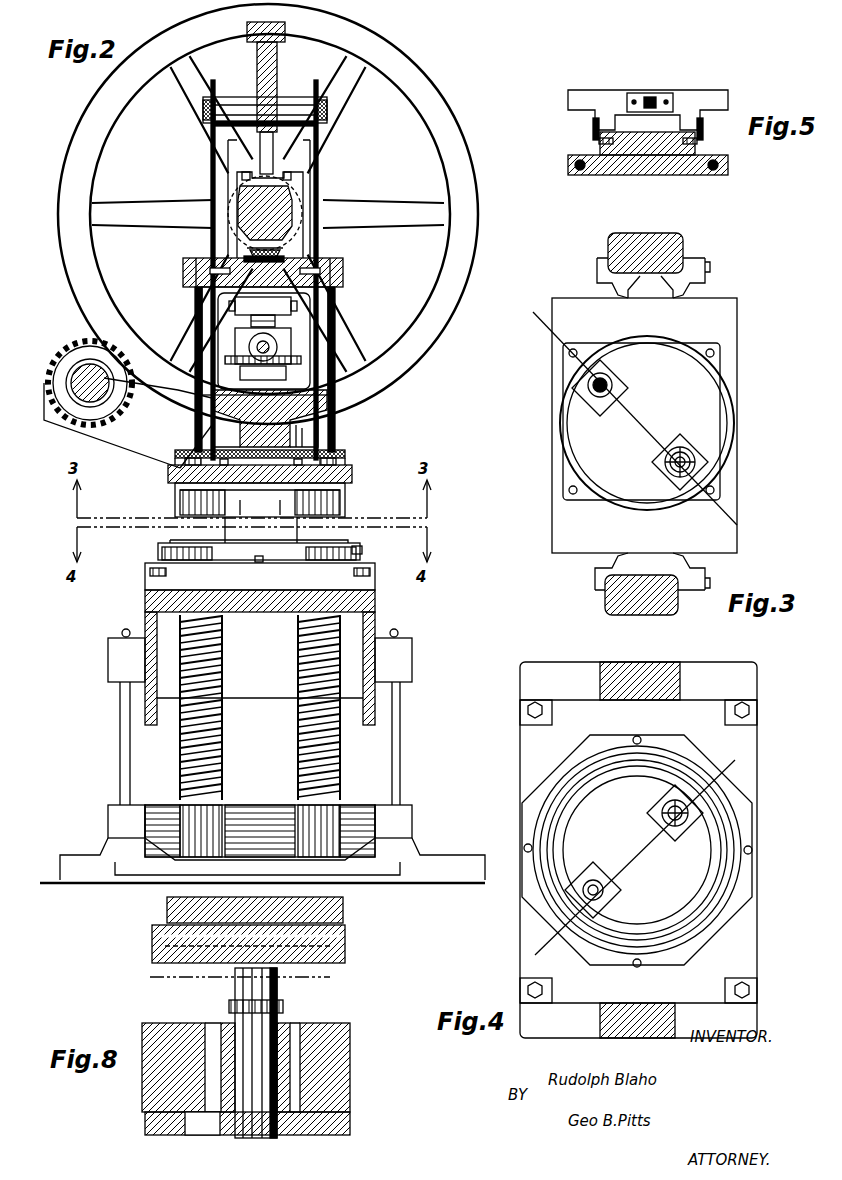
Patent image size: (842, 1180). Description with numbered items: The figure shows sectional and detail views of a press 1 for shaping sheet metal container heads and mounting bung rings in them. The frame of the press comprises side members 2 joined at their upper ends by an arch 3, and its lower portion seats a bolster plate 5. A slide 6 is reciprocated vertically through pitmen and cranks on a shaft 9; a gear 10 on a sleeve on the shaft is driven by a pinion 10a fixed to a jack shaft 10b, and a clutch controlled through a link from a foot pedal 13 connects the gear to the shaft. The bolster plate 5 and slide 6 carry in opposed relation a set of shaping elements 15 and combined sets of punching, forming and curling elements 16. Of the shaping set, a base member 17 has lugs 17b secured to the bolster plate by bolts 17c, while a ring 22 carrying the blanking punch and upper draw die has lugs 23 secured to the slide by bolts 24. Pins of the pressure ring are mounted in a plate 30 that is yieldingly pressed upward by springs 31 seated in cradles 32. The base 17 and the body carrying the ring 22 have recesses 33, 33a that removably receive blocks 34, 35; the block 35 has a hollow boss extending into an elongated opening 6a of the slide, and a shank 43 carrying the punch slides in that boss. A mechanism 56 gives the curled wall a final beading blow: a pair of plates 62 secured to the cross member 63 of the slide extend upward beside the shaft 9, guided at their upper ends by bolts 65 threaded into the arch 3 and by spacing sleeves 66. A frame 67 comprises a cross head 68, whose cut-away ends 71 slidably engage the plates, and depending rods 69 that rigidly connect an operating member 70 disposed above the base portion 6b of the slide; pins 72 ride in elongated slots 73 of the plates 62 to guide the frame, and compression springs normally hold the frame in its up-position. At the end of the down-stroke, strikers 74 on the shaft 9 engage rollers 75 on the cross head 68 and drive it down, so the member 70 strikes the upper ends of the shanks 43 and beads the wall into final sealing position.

In FIG. 2, the press 1 is at (246, 591).
In FIG. 3, the side members 2 is at (665, 235).
In FIG. 4, the side members 2 is at (640, 850).
In FIG. 2, the arch 3 is at (286, 30).
In FIG. 2, the bolster plate 5 is at (183, 270).
In FIG. 4, the bolster plate 5 is at (522, 748).
In FIG. 3, the slide 6 is at (748, 308).
In FIG. 4, the slide 6 is at (632, 851).
In FIG. 8, the opening 6a is at (340, 1052).
In FIG. 2, the base portion 6b is at (170, 478).
In FIG. 2, the shaft 9 is at (292, 218).
In FIG. 2, the gear 10 is at (428, 106).
In FIG. 2, the pinion 10a is at (76, 342).
In FIG. 2, the jack shaft 10b is at (72, 440).
In FIG. 2, the foot pedal 13 is at (464, 858).
In FIG. 2, the set of shaping elements 15 is at (273, 500).
In FIG. 3, the set of shaping elements 15 is at (647, 423).
In FIG. 4, the set of shaping elements 15 is at (637, 850).
In FIG. 3, the combined set of forming and stamping elements 16 is at (641, 421).
In FIG. 4, the combined set of forming and stamping elements 16 is at (634, 850).
In FIG. 2, the base member 17 is at (158, 549).
In FIG. 4, the base member 17 is at (578, 938).
In FIG. 2, the lugs 17b is at (258, 563).
In FIG. 4, the lugs 17b is at (660, 742).
In FIG. 2, the bolts 17c is at (362, 556).
In FIG. 4, the bolts 17c is at (632, 976).
In FIG. 3, the ring 22 is at (700, 366).
In FIG. 3, the lugs 23 is at (714, 358).
In FIG. 3, the bolts 24 is at (568, 490).
In FIG. 2, the plate 30 is at (250, 613).
In FIG. 2, the springs 31 is at (224, 662).
In FIG. 2, the cradles 32 is at (258, 815).
In FIG. 4, the recess 33 is at (690, 840).
In FIG. 3, the recess 33a is at (680, 438).
In FIG. 4, the block 34 is at (660, 818).
In FIG. 8, the block 35 is at (340, 1123).
In FIG. 3, the block 35 is at (652, 458).
In FIG. 8, the shank 43 is at (280, 1022).
In FIG. 2, the mechanism 56 is at (316, 410).
In FIG. 2, the plates 62 is at (210, 160).
In FIG. 2, the cross member 63 is at (212, 414).
In FIG. 8, the cross member 63 is at (338, 908).
In FIG. 2, the bolts 65 is at (328, 110).
In FIG. 2, the spacing sleeves 66 is at (238, 100).
In FIG. 2, the frame 67 is at (206, 300).
In FIG. 2, the cross head 68 is at (344, 262).
In FIG. 5, the cross head 68 is at (632, 165).
In FIG. 2, the rods 69 is at (378, 396).
In FIG. 5, the rods 69 is at (714, 172).
In FIG. 2, the operating member 70 is at (345, 455).
In FIG. 8, the operating member 70 is at (345, 934).
In FIG. 5, the cut-away guide walls 71 is at (570, 112).
In FIG. 5, the pins 72 is at (590, 142).
In FIG. 2, the elongated slots 73 is at (352, 473).
In FIG. 2, the strikers 74 is at (282, 180).
In FIG. 2, the rollers 75 is at (282, 256).
In FIG. 5, the rollers 75 is at (652, 93).